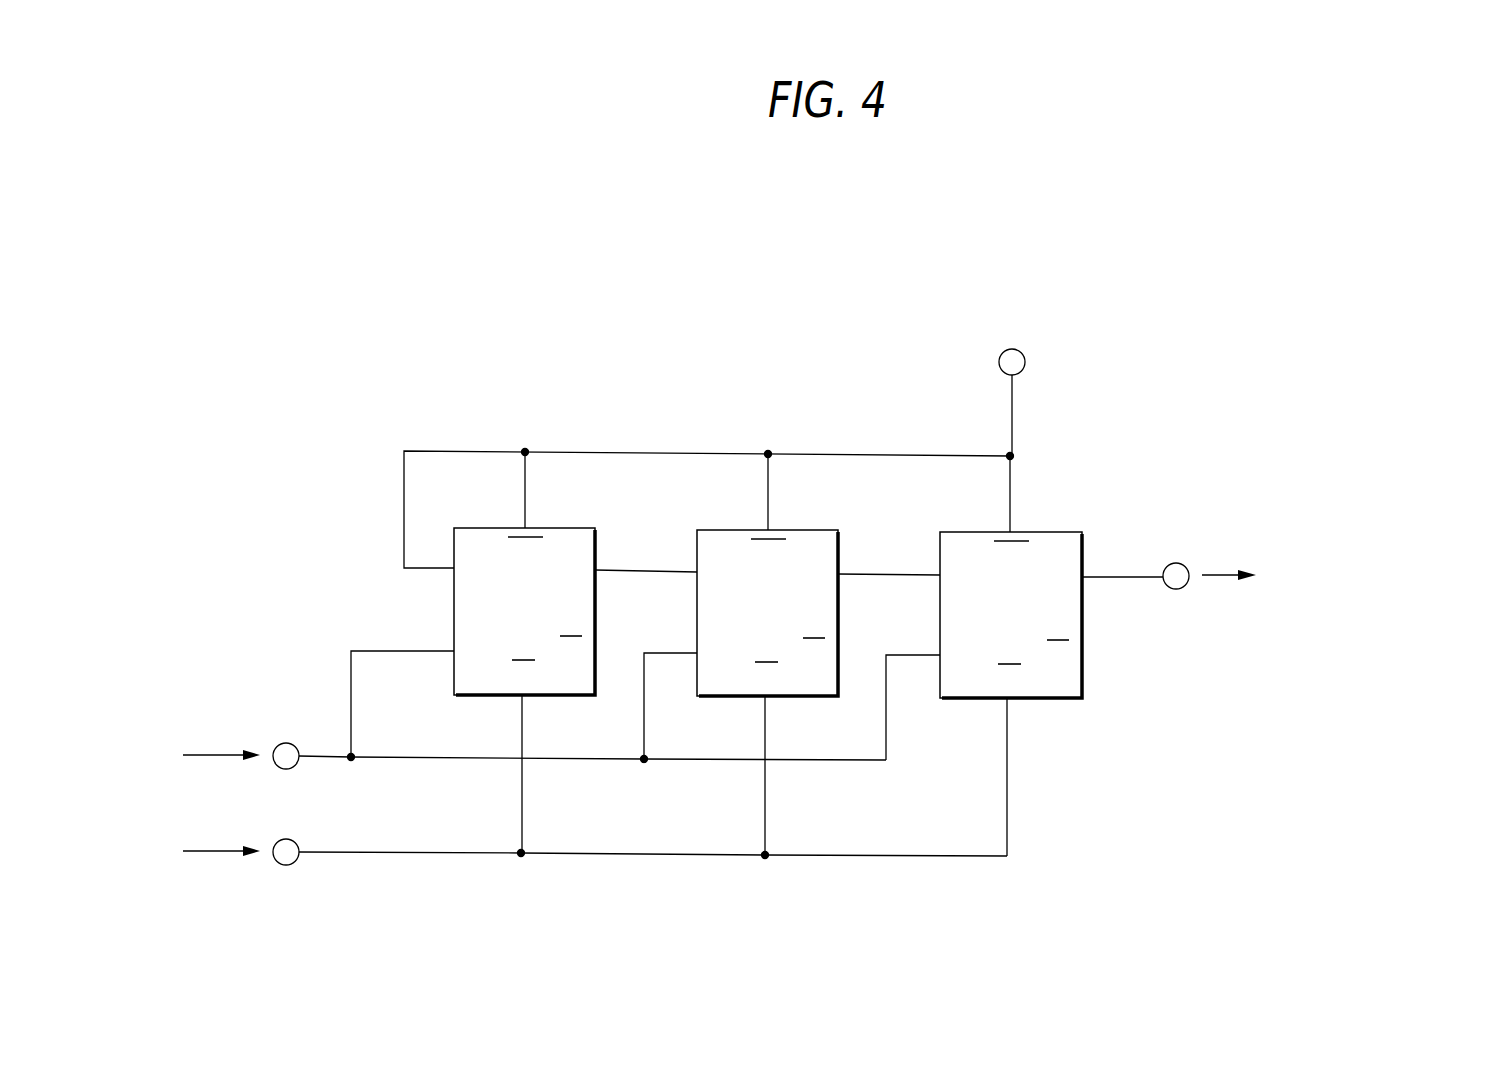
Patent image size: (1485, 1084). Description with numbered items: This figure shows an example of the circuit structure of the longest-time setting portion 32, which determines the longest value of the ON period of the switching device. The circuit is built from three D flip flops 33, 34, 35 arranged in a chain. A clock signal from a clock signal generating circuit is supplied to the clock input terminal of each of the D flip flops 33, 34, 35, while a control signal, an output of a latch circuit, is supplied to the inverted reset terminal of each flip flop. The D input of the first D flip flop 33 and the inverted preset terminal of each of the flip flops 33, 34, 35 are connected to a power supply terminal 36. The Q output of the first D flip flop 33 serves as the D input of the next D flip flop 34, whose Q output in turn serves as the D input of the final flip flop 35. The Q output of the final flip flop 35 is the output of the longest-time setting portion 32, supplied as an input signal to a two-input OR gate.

The longest-time setting portion 32 is at (501, 328).
The first D flip flop 33 is at (558, 528).
The D flip flop 34 is at (801, 530).
The final flip flop 35 is at (1046, 532).
The power supply terminal 36 is at (1026, 360).